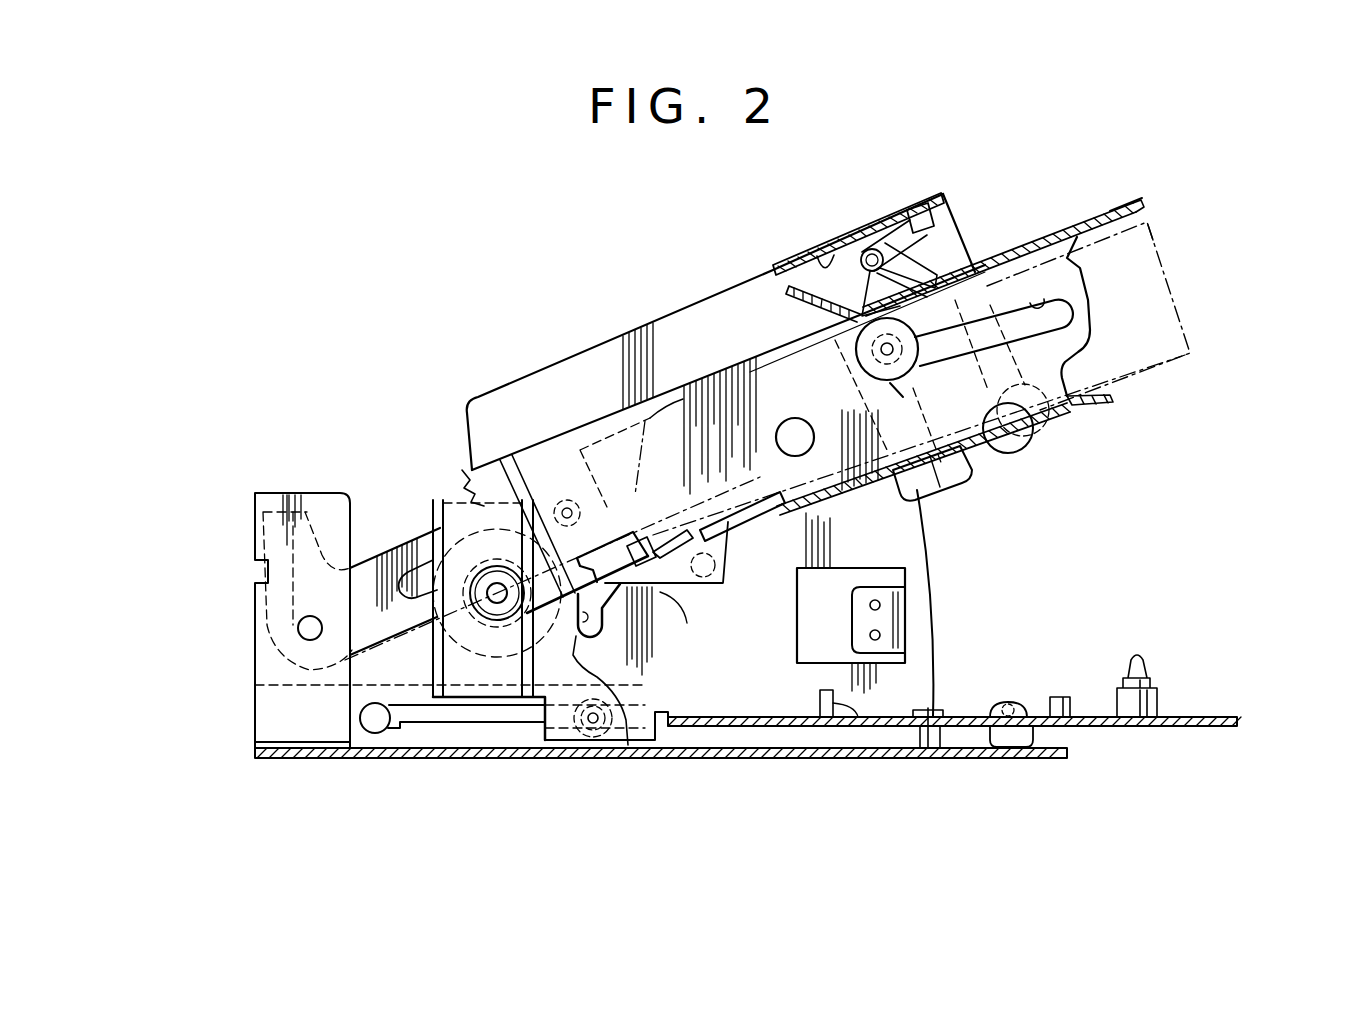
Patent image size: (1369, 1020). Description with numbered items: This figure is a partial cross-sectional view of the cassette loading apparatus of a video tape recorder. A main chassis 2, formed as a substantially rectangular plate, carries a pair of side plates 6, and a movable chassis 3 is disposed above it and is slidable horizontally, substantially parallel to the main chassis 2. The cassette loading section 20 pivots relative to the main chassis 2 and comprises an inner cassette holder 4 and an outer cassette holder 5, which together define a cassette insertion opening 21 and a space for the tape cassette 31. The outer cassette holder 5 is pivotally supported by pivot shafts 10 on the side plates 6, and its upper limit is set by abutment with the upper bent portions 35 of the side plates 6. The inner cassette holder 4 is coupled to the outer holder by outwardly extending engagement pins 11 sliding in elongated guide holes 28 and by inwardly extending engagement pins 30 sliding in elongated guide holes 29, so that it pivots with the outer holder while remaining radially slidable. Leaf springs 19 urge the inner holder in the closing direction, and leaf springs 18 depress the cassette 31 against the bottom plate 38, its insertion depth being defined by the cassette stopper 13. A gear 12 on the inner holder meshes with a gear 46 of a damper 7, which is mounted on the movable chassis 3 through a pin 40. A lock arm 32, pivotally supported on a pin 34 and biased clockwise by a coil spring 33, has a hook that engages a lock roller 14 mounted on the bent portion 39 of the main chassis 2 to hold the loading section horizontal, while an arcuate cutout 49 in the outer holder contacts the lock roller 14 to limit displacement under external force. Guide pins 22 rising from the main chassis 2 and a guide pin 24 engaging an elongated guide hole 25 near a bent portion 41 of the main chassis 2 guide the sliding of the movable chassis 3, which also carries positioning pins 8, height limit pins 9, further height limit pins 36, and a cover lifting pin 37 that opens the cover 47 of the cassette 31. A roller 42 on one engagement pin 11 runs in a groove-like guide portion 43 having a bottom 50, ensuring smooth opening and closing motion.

The main chassis 2 is at (807, 754).
The movable chassis 3 is at (1220, 727).
The inner cassette holder 4 is at (1128, 212).
The outer cassette holder 5 is at (935, 197).
The side plates 6 is at (318, 492).
The damper 7 is at (480, 645).
The positioning pins 8 is at (1135, 665).
The height limit pins 9 is at (860, 735).
The pivot shafts 10 is at (298, 624).
The engagement pins 11 is at (567, 487).
The gear 12 is at (470, 490).
The cassette stopper 13 is at (597, 637).
The lock roller 14 is at (1012, 705).
The leaf springs 18 is at (1028, 240).
The leaf springs 19 is at (815, 252).
The cassette loading section 20 is at (700, 298).
The cassette insertion opening 21 is at (1180, 307).
The guide pins 22 is at (935, 743).
The guide pin 24 is at (590, 728).
The elongated guide hole 25 is at (422, 715).
The elongated guide holes 28 is at (417, 565).
The elongated guide holes 29 is at (1045, 305).
The engagement pins 30 is at (872, 372).
The tape cassette 31 is at (1154, 244).
The lock arm 32 is at (915, 262).
The coil spring 33 is at (892, 236).
The pin 34 is at (858, 278).
The upper bent portions 35 is at (262, 500).
The height limit pins 36 is at (1066, 703).
The cover lifting pin 37 is at (693, 578).
The bottom plate 38 is at (935, 492).
The bent portion 39 is at (1003, 742).
The pin 40 is at (505, 640).
The bent portion 41 is at (397, 738).
The roller 42 is at (637, 453).
The guide portion 43 is at (628, 745).
The gear 46 is at (486, 606).
The cover 47 is at (710, 522).
The arcuate cutout 49 is at (1053, 412).
The bottom 50 is at (687, 623).